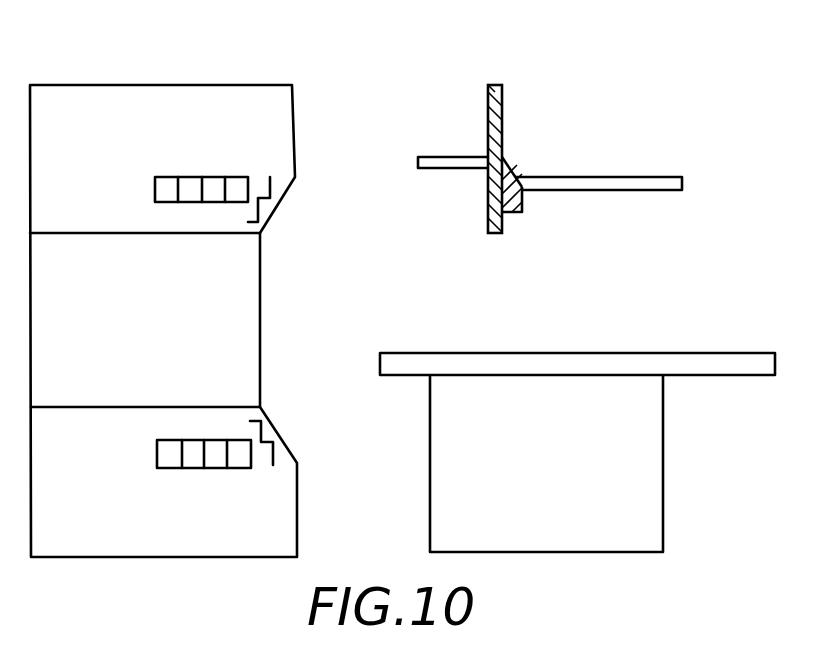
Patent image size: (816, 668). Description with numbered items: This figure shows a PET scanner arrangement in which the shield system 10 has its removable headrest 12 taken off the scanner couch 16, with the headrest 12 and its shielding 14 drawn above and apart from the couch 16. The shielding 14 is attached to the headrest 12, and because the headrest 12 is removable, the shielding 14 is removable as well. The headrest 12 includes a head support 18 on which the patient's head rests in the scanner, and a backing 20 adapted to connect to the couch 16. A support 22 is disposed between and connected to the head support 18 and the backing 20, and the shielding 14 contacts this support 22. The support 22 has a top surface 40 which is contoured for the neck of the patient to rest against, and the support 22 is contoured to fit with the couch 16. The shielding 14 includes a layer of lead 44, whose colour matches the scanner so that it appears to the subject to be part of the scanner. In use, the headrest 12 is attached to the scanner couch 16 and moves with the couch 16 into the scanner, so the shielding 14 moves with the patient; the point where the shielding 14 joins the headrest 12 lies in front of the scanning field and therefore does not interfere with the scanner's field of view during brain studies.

The shield system 10 is at (700, 148).
The headrest 12 is at (609, 117).
The shielding 14 is at (503, 97).
The scanner couch 16 is at (637, 353).
The head support 18 is at (447, 169).
The backing 20 is at (652, 191).
The support 22 is at (512, 213).
The top surface 40 is at (512, 166).
The layer of lead 44 is at (497, 85).